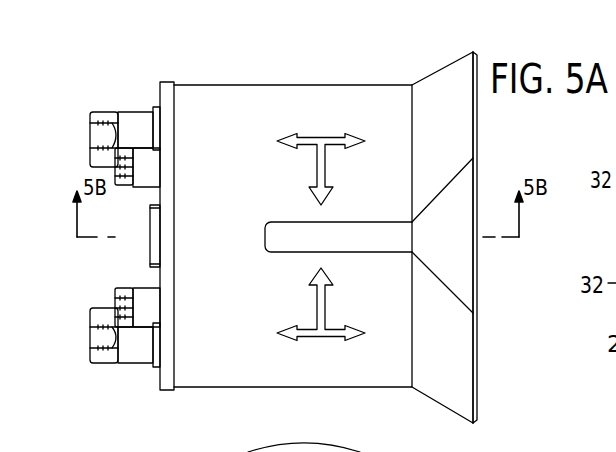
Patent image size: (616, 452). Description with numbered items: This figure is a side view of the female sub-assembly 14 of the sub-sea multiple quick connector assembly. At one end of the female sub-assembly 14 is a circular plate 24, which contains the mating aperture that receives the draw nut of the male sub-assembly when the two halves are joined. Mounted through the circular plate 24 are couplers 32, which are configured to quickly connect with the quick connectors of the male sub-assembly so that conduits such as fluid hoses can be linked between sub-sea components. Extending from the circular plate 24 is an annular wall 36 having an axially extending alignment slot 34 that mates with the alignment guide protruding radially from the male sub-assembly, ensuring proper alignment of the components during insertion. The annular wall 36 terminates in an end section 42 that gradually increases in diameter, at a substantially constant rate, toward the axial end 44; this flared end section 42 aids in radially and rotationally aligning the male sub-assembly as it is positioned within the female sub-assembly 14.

The female sub-assembly 14 is at (146, 83).
The circular plate 24 is at (168, 83).
The couplers 32 is at (153, 128).
The alignment slot 34 is at (360, 230).
The annular wall 36 is at (293, 84).
The end section 42 is at (439, 394).
The axial end 44 is at (478, 425).